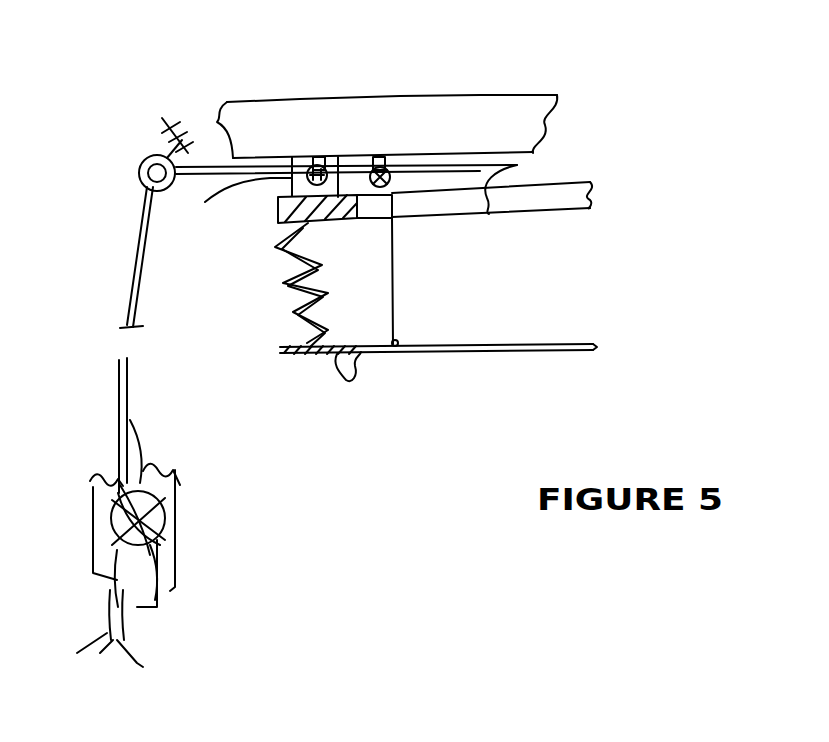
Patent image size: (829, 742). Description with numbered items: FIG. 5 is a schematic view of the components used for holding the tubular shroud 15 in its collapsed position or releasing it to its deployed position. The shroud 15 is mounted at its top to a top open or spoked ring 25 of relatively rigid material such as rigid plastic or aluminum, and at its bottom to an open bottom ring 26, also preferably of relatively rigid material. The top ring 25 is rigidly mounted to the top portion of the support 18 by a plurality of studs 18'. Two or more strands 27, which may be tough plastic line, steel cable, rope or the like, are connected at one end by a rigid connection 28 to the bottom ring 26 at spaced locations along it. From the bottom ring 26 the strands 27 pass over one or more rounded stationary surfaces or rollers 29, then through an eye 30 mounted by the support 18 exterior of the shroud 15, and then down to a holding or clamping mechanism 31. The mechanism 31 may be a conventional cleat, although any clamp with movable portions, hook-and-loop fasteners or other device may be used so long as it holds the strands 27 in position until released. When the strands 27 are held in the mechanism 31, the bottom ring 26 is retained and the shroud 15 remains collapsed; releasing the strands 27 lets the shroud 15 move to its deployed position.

The support 18 is at (341, 324).
The studs 18' is at (231, 203).
The rounded stationary surfaces or rollers 29 is at (384, 176).
The eye 30 is at (140, 167).
The top open or spoked ring 25 is at (292, 209).
The shroud 15 is at (273, 297).
The bottom ring 26 is at (353, 379).
The rigid connection 28 is at (397, 344).
The strands 27 is at (398, 260).
The holding or clamping mechanism 31 is at (113, 543).